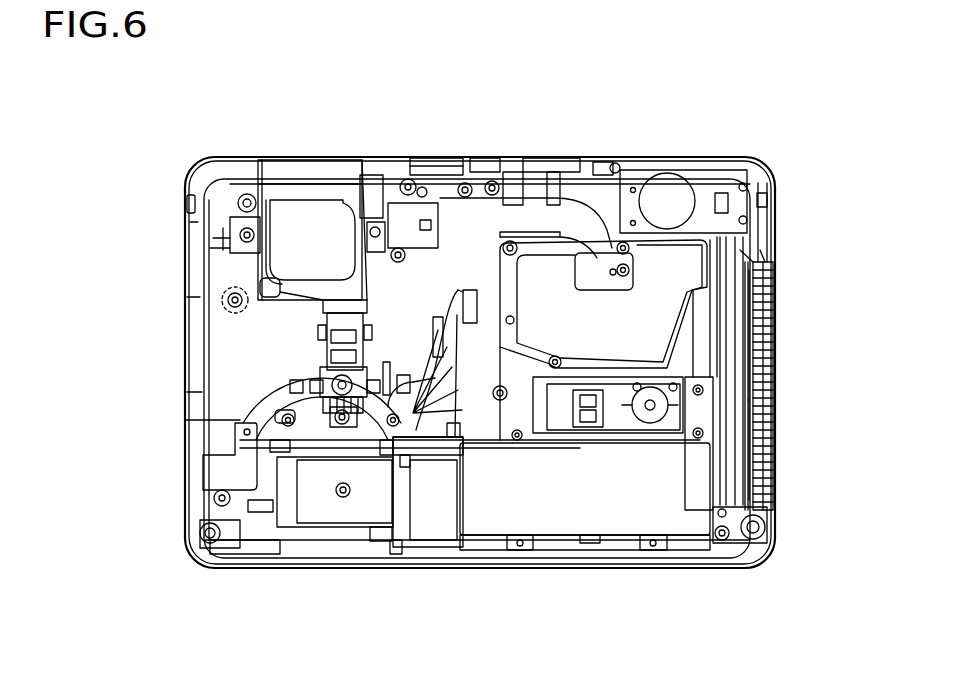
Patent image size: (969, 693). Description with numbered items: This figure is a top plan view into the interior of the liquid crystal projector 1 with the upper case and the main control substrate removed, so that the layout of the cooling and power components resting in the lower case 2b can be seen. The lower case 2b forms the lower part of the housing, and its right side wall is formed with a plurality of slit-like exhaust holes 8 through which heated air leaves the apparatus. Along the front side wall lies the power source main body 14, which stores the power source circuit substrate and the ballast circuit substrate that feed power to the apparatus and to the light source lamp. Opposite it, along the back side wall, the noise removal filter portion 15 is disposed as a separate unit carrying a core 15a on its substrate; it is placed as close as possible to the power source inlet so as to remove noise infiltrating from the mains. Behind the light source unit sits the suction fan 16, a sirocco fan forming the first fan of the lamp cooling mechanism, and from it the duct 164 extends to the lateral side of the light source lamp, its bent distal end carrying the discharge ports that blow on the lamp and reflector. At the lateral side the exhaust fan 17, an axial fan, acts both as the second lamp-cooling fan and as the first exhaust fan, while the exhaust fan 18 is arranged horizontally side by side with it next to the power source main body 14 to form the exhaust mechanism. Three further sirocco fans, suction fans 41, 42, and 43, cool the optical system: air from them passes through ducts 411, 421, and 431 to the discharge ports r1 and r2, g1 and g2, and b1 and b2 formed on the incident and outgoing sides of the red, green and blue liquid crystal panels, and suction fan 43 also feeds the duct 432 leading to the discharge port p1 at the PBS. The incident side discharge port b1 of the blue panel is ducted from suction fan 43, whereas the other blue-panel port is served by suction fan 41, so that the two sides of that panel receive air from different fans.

The liquid crystal projector 1 is at (757, 121).
The lower case 2b is at (773, 184).
The exhaust holes 8 is at (776, 354).
The power source main body 14 is at (578, 492).
The noise removal filter portion 15 is at (624, 198).
The core 15a is at (667, 184).
The suction fan 16 is at (473, 166).
The duct 164 is at (524, 185).
The exhaust fan 17 is at (775, 246).
The exhaust fan 18 is at (775, 464).
The suction fan 41 is at (262, 512).
The suction fan 42 is at (303, 197).
The suction fan 43 is at (436, 512).
The duct 411 is at (300, 396).
The duct 421 is at (195, 214).
The duct 431 is at (412, 378).
The duct 432 is at (448, 318).
The discharge port g1 is at (323, 302).
The discharge port g2 is at (327, 353).
The discharge port r1 is at (322, 396).
The discharge port r2 is at (300, 379).
The discharge port p1 is at (466, 298).
The incident side discharge port b1 is at (396, 556).
The discharge port b2 is at (385, 546).